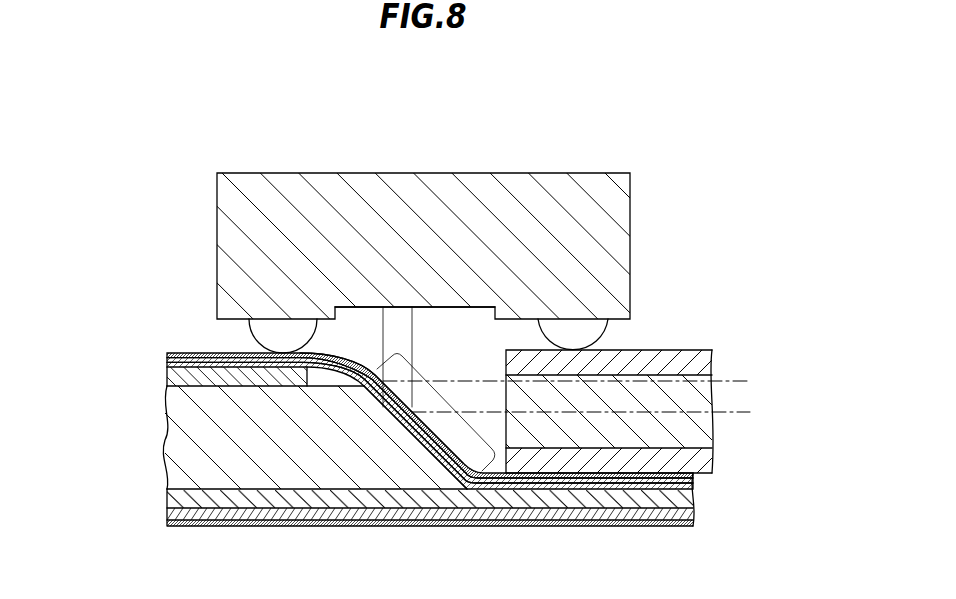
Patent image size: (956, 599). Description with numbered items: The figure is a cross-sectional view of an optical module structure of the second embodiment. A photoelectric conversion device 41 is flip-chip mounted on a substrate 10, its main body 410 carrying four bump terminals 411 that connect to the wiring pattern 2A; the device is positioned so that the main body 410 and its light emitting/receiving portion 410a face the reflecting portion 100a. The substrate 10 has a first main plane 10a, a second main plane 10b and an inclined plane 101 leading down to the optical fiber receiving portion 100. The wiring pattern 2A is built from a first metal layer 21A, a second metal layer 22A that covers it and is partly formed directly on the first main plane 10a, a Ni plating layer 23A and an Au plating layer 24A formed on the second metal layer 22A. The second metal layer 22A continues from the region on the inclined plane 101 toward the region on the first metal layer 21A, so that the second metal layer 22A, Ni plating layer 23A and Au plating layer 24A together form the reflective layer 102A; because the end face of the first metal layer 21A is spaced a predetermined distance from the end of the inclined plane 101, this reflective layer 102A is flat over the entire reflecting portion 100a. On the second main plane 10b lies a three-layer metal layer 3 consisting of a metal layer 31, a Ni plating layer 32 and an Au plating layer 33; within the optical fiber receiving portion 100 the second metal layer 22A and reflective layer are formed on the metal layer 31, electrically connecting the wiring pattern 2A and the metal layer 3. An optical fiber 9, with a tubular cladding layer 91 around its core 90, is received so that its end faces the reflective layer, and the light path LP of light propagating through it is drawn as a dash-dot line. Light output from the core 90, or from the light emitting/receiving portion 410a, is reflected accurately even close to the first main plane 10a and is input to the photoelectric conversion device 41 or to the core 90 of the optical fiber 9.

The photoelectric conversion device 41 is at (432, 299).
The main body 410 is at (623, 249).
The light emitting/receiving portion 410a is at (403, 310).
The terminals 411 is at (282, 323).
The optical fiber receiving portion 100 is at (418, 354).
The reflecting portion 100a is at (481, 338).
The substrate 10 is at (304, 403).
The first main plane 10a is at (196, 366).
The second main plane 10b is at (208, 491).
The inclined plane 101 is at (415, 445).
The reflective layer 102A is at (446, 411).
The wiring pattern 2A is at (368, 417).
The first metal layer 21A is at (168, 377).
The second metal layer 22A is at (168, 364).
The Ni plating layer 23A is at (168, 359).
The Au plating layer 24A is at (84, 397).
The metal layer 3 is at (381, 517).
The metal layer 31 is at (168, 503).
The Ni plating layer 32 is at (168, 514).
The Au plating layer 33 is at (397, 537).
The optical fiber 9 is at (645, 396).
The core 90 is at (703, 431).
The cladding layer 91 is at (698, 357).
The light path LP is at (728, 412).